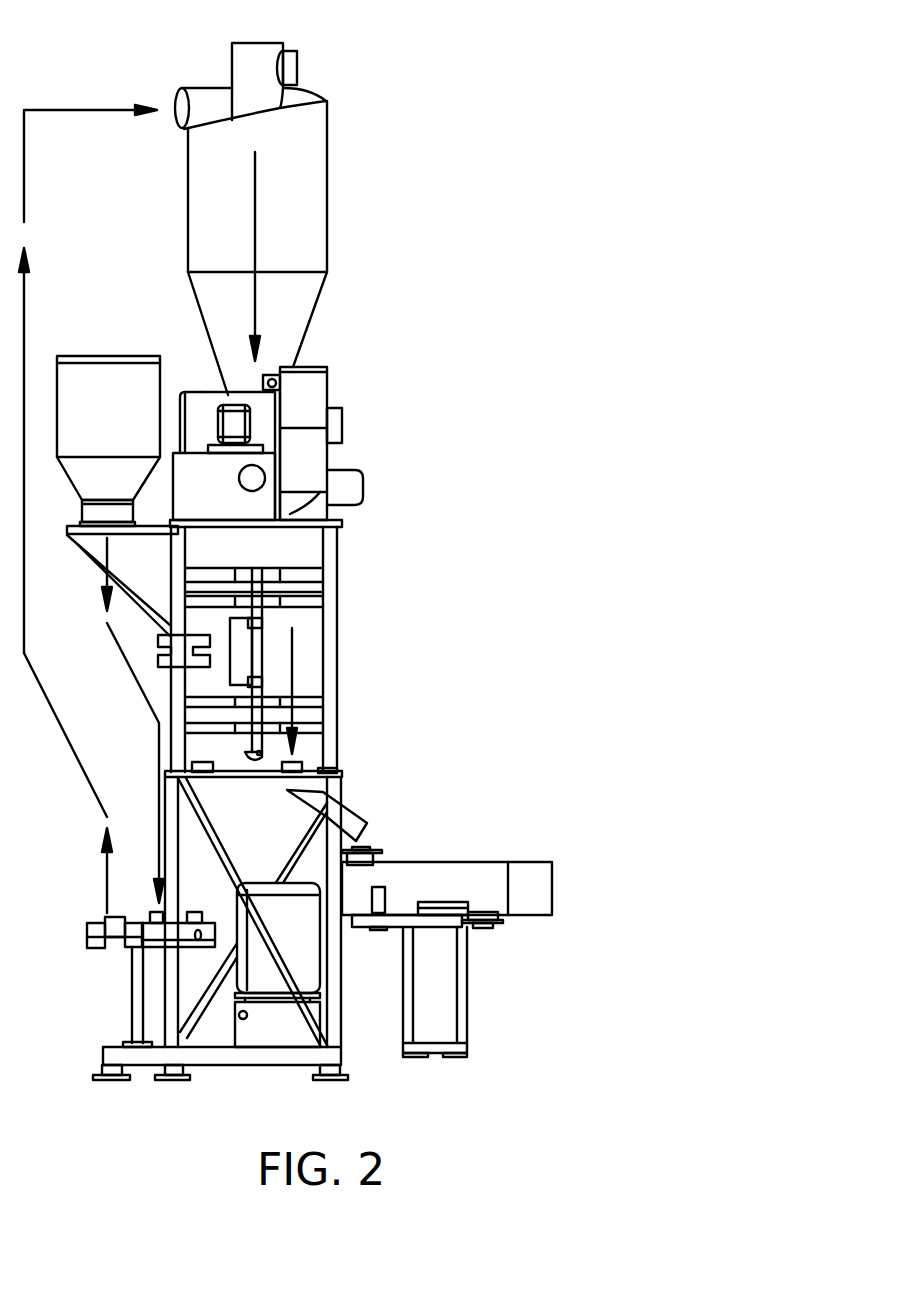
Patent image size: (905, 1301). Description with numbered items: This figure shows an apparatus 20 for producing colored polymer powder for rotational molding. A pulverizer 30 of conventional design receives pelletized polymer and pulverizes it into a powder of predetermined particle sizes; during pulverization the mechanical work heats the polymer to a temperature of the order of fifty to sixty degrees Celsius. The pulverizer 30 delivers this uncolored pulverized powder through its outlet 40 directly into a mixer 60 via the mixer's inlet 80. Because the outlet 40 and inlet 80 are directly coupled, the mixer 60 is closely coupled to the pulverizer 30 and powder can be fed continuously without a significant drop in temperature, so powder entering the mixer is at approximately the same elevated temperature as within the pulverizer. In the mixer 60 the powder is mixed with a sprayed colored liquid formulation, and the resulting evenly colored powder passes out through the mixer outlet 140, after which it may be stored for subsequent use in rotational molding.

The apparatus 20 is at (650, 265).
The pulverizer 30 is at (327, 200).
The outlet 40 is at (358, 818).
The mixer 60 is at (422, 860).
The inlet 80 is at (372, 847).
The outlet 140 is at (532, 930).